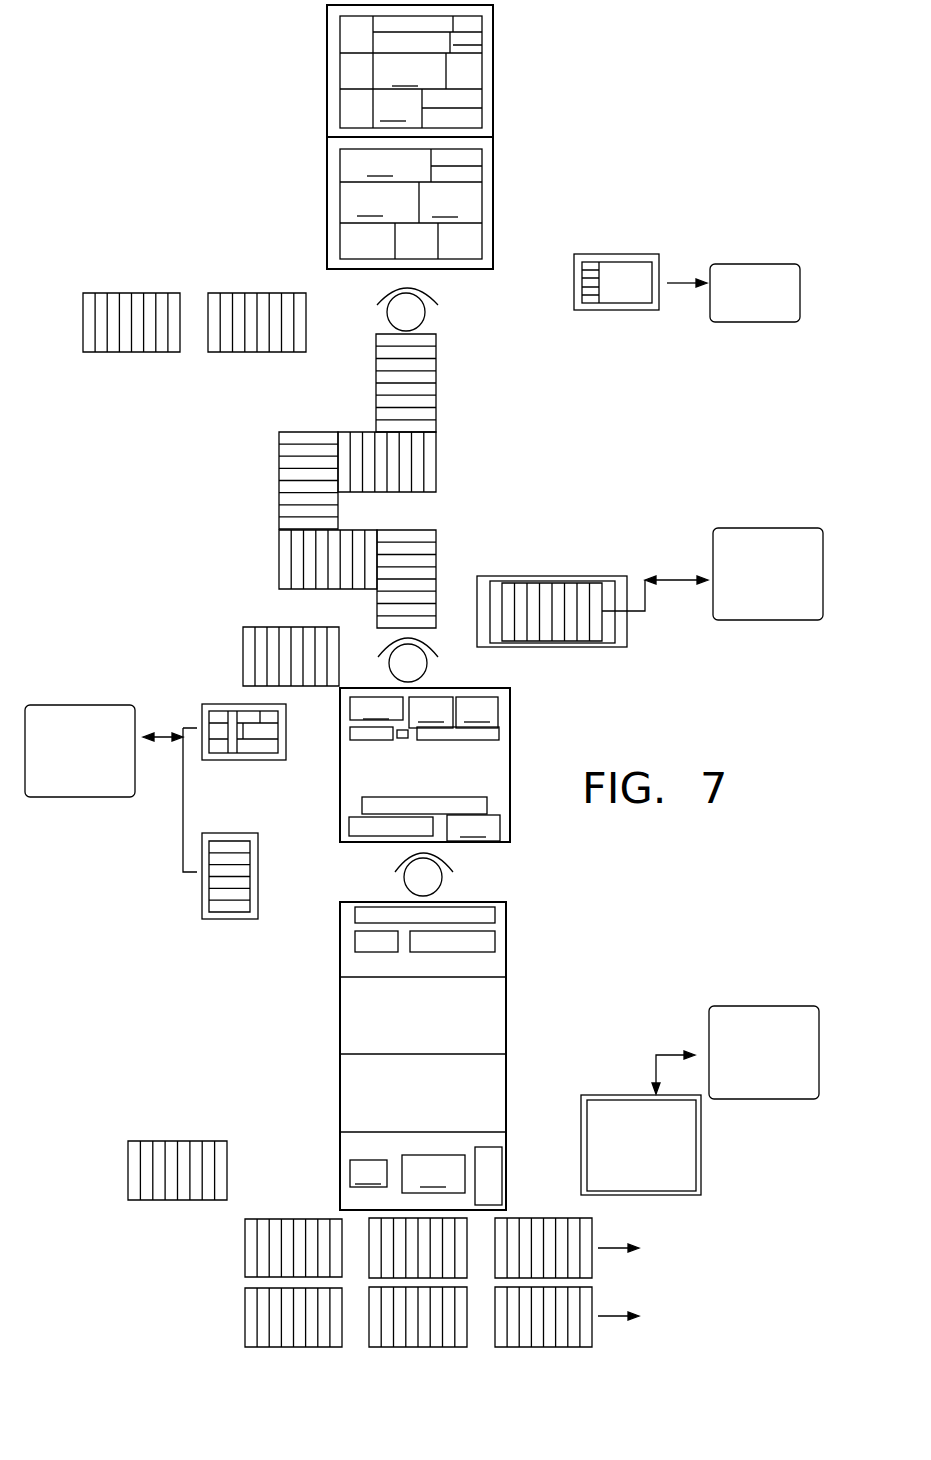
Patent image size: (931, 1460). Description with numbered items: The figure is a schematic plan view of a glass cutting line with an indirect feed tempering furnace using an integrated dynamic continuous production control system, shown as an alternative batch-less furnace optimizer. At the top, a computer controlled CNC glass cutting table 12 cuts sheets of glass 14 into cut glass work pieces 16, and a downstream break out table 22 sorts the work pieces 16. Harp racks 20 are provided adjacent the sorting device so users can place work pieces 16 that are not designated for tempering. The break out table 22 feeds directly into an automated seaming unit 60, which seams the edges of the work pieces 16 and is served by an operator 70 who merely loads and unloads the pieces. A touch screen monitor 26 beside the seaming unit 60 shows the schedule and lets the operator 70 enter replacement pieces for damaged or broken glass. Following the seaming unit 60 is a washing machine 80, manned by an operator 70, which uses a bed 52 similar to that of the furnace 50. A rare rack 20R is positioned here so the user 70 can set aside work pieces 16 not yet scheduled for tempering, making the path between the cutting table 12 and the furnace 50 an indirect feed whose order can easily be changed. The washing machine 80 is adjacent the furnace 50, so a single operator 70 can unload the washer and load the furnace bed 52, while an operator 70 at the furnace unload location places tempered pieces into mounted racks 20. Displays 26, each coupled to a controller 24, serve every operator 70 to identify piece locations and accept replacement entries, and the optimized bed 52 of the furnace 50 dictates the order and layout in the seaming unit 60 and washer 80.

The glass cutting table 12 is at (493, 82).
The sheets of glass 14 is at (440, 23).
The cut glass work pieces 16 is at (393, 827).
The harp rack 20 is at (150, 353).
The rare rack 20R is at (243, 645).
The break out table 22 is at (493, 187).
The controller 24 is at (751, 301).
The touch screen monitor 26 is at (610, 313).
The tempering furnace 50 is at (478, 1018).
The furnace bed 52 is at (503, 962).
The seaming unit 60 is at (279, 513).
The operator 70 is at (393, 324).
The washing machine 80 is at (405, 786).